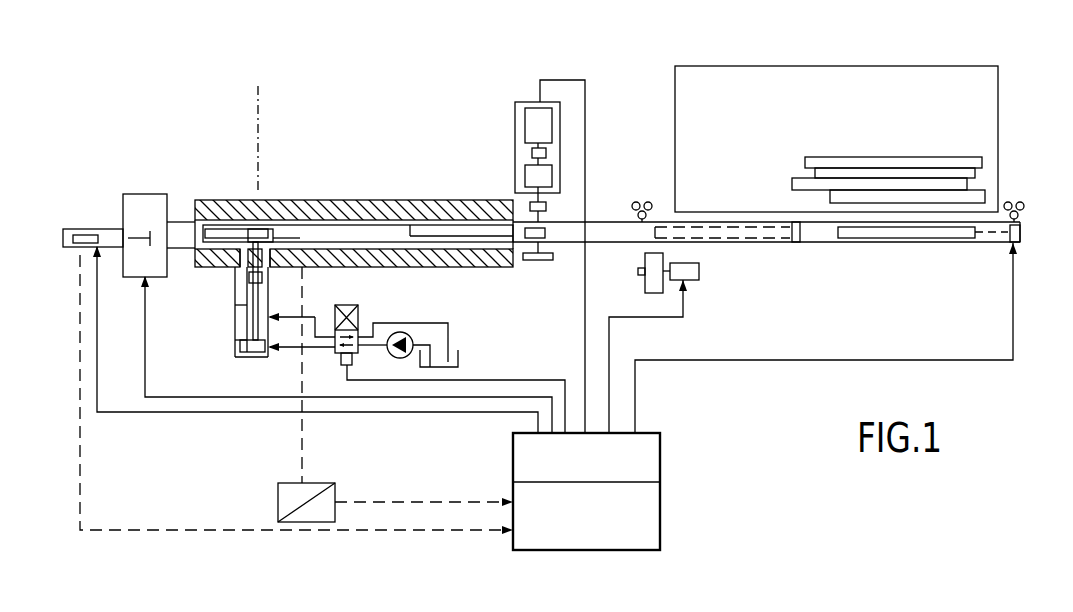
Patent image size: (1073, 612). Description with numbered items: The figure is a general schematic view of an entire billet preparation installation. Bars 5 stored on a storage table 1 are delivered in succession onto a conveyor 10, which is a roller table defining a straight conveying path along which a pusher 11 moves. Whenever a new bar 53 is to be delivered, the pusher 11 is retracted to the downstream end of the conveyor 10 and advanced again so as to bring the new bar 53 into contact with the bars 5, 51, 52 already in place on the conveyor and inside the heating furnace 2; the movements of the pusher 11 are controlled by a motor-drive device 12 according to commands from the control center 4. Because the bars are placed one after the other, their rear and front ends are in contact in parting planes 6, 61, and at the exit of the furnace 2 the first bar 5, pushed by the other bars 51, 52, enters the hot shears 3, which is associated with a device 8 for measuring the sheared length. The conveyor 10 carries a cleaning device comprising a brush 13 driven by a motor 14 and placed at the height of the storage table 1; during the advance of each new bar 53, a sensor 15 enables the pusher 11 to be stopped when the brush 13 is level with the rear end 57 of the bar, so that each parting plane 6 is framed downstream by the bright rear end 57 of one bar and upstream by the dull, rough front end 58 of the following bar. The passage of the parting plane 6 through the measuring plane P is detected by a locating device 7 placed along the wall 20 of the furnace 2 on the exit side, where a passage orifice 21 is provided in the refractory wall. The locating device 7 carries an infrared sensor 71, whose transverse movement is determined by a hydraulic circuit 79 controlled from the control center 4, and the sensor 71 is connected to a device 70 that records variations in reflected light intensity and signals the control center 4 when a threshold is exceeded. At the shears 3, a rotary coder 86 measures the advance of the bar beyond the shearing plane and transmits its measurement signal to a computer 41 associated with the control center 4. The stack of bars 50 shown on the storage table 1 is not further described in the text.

The storage table 1 is at (933, 75).
The heating furnace 2 is at (467, 200).
The hot shears 3 is at (143, 194).
The control center 4 is at (635, 463).
The bar 5 is at (217, 235).
The parting plane 6 is at (291, 235).
The locating device 7 is at (262, 308).
The device for measuring the sheared length 8 is at (87, 228).
The conveyor 10 is at (609, 220).
The pusher 11 is at (1025, 225).
The motor-drive device 12 is at (536, 95).
The brush 13 is at (645, 272).
The motor 14 is at (699, 270).
The sensor 15 is at (643, 201).
The wall 20 is at (440, 258).
The passage orifice 21 is at (262, 257).
The computer 41 is at (628, 513).
The wafer stack 50 is at (950, 160).
The bar 51 is at (360, 233).
The bar 52 is at (432, 226).
The new bar 53 is at (930, 238).
The rear end 57 is at (263, 233).
The rough front end 58 is at (278, 237).
The parting plane 61 is at (410, 233).
The device 70 is at (340, 488).
The sensor 71 is at (249, 278).
The hydraulic circuit 79 is at (350, 305).
The rotary coder 86 is at (90, 248).
The measuring plane P is at (251, 128).